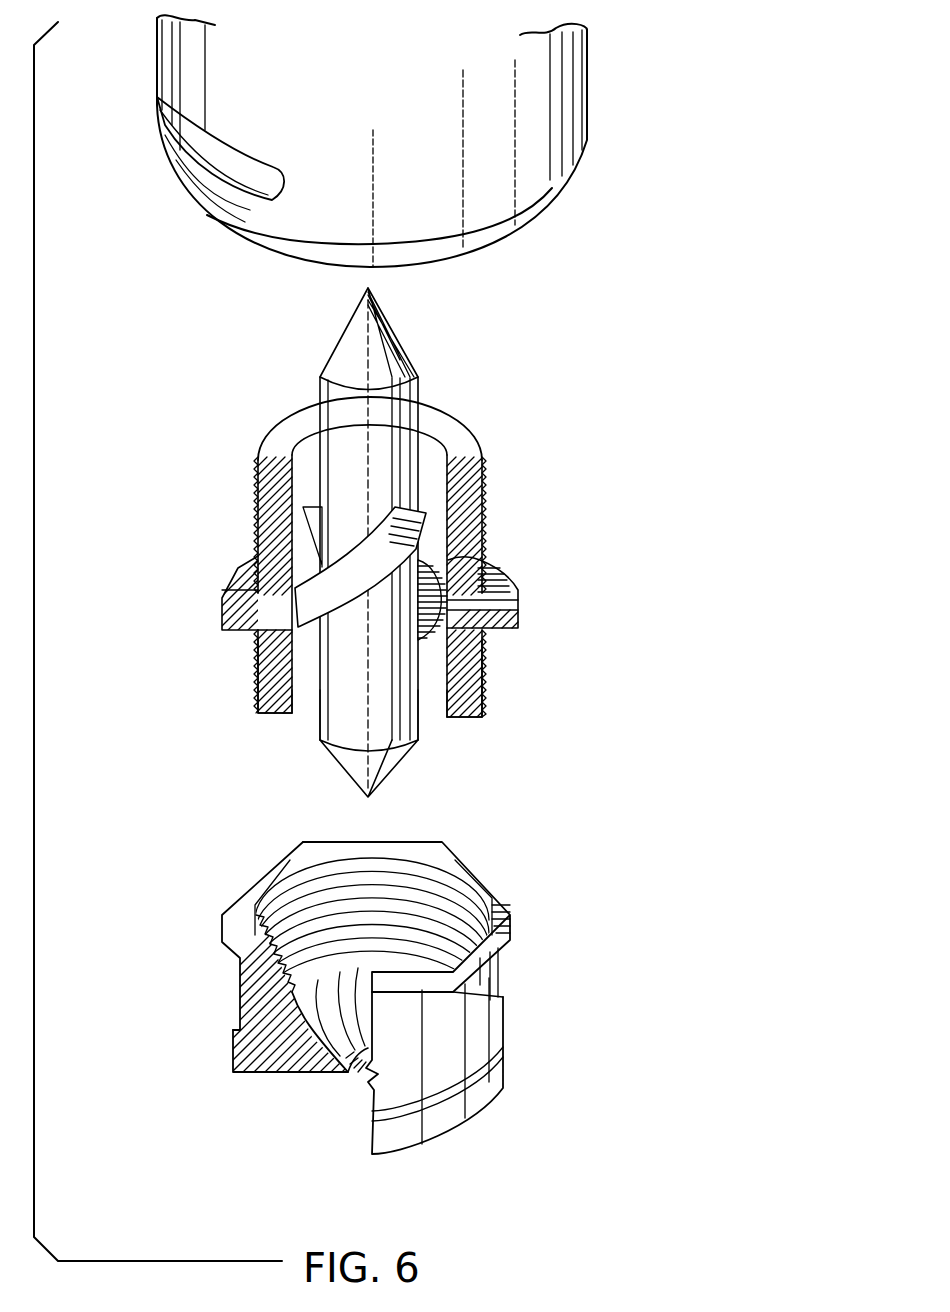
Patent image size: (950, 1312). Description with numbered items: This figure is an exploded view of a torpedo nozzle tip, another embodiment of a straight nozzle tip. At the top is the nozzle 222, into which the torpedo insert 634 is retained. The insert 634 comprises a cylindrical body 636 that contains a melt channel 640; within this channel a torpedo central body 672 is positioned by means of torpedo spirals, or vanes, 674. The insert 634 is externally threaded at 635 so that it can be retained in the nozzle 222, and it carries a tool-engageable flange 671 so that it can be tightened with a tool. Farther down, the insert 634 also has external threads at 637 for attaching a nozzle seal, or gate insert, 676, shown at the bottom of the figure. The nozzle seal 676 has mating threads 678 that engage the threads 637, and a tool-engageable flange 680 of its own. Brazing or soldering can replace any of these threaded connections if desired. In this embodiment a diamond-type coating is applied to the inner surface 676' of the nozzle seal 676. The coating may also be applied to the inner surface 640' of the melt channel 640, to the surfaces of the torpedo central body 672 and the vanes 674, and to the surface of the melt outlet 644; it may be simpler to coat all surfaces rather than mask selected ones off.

The nozzle 222 is at (540, 88).
The torpedo insert 634 is at (548, 541).
The torpedo central body 672 is at (380, 412).
The cylindrical body 636 is at (468, 457).
The external threads 635 is at (473, 522).
The tool-engageable flange 671 is at (237, 616).
The torpedo spirals (vanes) 674 is at (315, 586).
The external threads 637 is at (473, 688).
The melt channel 640 is at (256, 742).
The inner surface of melt channel 640' is at (515, 716).
The nozzle seal (gate insert) 676 is at (462, 998).
The tool-engageable flange 680 is at (512, 926).
The mating threads 678 is at (242, 966).
The melt outlet 644 is at (354, 1068).
The inner surface of nozzle seal 676' is at (375, 1066).